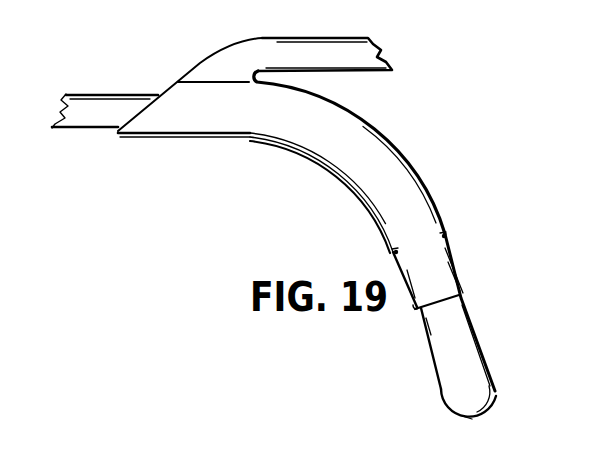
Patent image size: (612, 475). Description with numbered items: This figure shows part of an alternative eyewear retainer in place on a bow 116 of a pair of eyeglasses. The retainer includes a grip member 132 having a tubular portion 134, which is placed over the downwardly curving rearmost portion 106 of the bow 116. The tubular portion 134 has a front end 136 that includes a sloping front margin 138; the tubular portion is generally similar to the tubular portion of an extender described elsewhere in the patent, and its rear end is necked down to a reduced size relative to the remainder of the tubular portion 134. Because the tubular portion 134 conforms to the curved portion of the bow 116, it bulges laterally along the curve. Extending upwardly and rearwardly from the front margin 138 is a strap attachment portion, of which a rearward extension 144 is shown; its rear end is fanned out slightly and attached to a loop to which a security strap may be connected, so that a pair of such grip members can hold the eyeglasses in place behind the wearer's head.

The downwardly curving rearmost portion 106 is at (470, 419).
The bow 116 is at (89, 94).
The grip member 132 is at (319, 171).
The tubular portion 134 is at (351, 188).
The front end 136 is at (118, 131).
The sloping front margin 138 is at (150, 97).
The rearward extension 144 is at (364, 73).